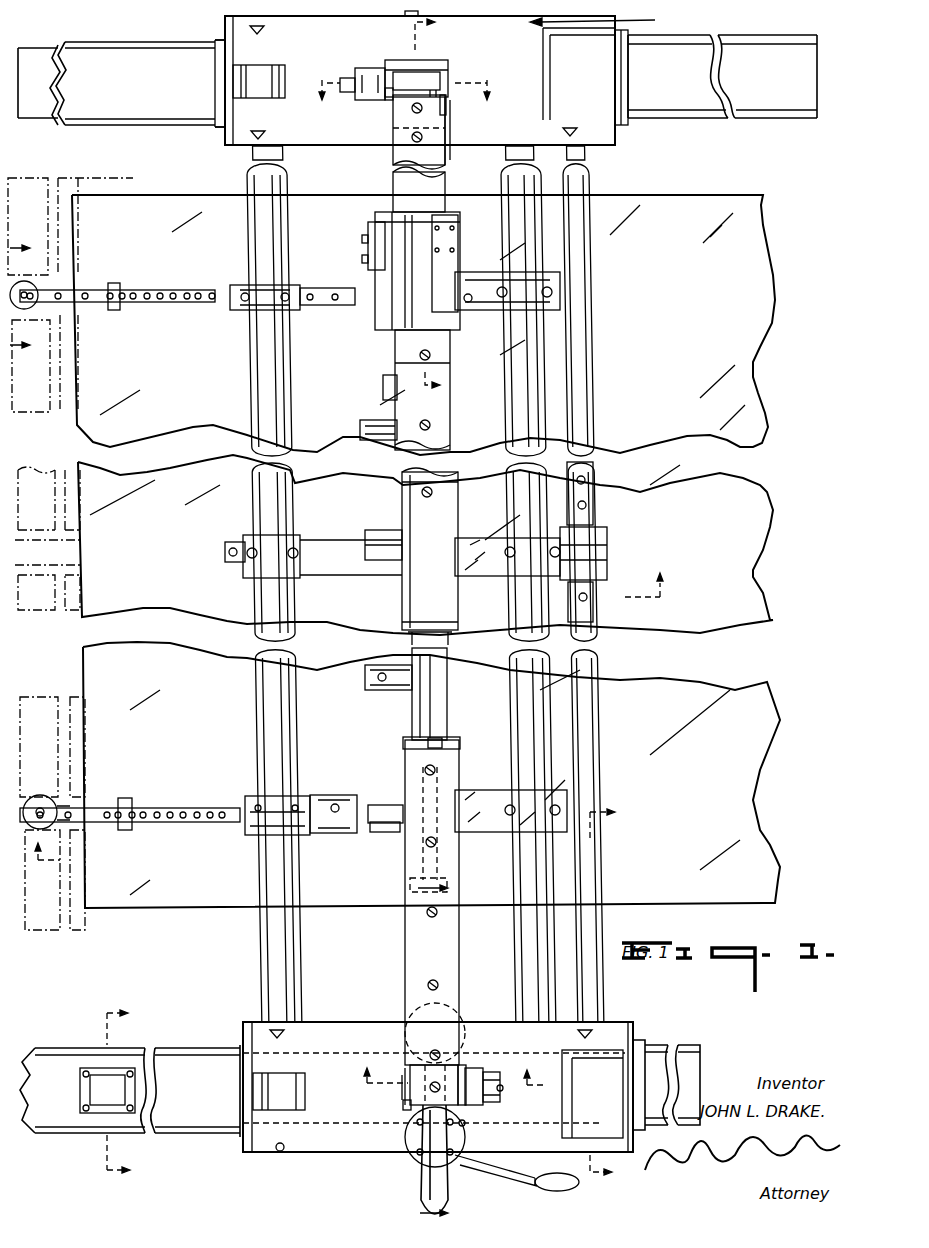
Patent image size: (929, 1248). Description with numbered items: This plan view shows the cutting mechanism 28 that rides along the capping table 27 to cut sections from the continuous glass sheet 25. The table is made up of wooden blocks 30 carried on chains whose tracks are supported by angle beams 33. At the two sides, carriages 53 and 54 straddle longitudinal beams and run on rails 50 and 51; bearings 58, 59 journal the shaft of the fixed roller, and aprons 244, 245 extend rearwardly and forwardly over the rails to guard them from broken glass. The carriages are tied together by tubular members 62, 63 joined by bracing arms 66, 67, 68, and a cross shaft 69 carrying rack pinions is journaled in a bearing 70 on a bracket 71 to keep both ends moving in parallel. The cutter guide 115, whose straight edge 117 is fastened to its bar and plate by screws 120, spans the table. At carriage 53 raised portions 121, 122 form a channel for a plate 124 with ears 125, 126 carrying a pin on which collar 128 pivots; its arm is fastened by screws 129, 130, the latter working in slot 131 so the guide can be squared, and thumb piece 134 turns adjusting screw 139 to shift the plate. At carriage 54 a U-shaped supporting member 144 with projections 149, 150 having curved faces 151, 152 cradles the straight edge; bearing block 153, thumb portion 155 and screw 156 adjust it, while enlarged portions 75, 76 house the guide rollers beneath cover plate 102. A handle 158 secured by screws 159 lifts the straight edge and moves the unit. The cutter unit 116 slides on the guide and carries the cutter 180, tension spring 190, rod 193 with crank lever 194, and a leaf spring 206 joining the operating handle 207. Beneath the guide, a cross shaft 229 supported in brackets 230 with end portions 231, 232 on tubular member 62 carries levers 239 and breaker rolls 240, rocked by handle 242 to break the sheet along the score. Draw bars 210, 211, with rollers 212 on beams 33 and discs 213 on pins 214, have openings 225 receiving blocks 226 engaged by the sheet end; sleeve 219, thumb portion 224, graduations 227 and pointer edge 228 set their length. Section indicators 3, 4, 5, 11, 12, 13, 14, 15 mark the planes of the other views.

The rail 50 is at (40, 60).
The guard member 245 is at (177, 105).
The cutting mechanism 28 is at (592, 16).
The guard member 244 is at (755, 98).
The raised portion 121 is at (395, 62).
The section line 11 is at (433, 216).
The collar 128 is at (440, 65).
The rectangular plate 124 is at (448, 75).
The thumb piece 134 is at (356, 80).
The section line 4 is at (405, 85).
The adjusting screw 139 is at (345, 92).
The upstanding ear 126 is at (388, 100).
The upstanding ear 125 is at (440, 92).
The raised portion 122 is at (447, 112).
The screw 129 is at (425, 137).
The supporting carriage 53 is at (332, 136).
The screw 130 is at (393, 155).
The slot 131 is at (446, 145).
The capping table 27 is at (68, 185).
The section line 14 is at (25, 300).
The angle beam 33 is at (55, 272).
The openings 225 is at (160, 290).
The block 226 is at (60, 292).
The horizontal rollers 212 is at (110, 310).
The draw bar 211 is at (152, 304).
The sleeve 219 is at (245, 318).
The thumb portion 224 is at (320, 306).
The edge 228 is at (300, 312).
The rod 193 is at (395, 340).
The flat leaf spring 206 is at (383, 378).
The operating handle 207 is at (388, 425).
The crank lever 194 is at (419, 189).
The cutter unit 116 is at (445, 235).
The cutter 180 is at (372, 250).
The bracing arm 68 is at (480, 275).
The tension spring 190 is at (385, 270).
The glass sheet 25 is at (770, 265).
The cutter guide 115 is at (442, 523).
The breaker rolls 240 is at (388, 540).
The bracket 71 is at (570, 530).
The bearing 70 is at (607, 545).
The section line 13 is at (358, 729).
The bracing arm 67 is at (338, 578).
The wooden blocks 30 is at (45, 700).
The disc 213 is at (38, 797).
The vertical pin 214 is at (48, 808).
The draw bar 210 is at (195, 808).
The graduations 227 is at (262, 838).
The tubular member 62 is at (448, 683).
The cross shaft 229 is at (420, 712).
The upstanding end portion 231 is at (442, 738).
The brackets 230 is at (403, 750).
The tubular member 63 is at (527, 752).
The bracing arm 66 is at (500, 792).
The levers 239 is at (385, 832).
The section line 15 is at (611, 994).
The cross shaft 69 is at (583, 870).
The upstanding end portion 232 is at (412, 885).
The section line 12 is at (451, 1050).
The straight edge 117 is at (408, 938).
The screws 120 is at (440, 982).
The hollow enlarged portion 75 is at (410, 1018).
The supporting carriage 54 is at (372, 1015).
The screws 159 is at (437, 1048).
The arcuately curved face 151 is at (405, 1068).
The projecting portion 150 is at (463, 1068).
The thumb portion 155 is at (495, 1075).
The section line 3 is at (448, 1081).
The projecting portion 149 is at (410, 1098).
The supporting member 144 is at (403, 1112).
The bearing block 153 is at (478, 1100).
The screw 156 is at (505, 1092).
The cover plate 102 is at (407, 1135).
The arcuately curved face 152 is at (466, 1125).
The hollow enlarged portion 76 is at (415, 1150).
The operating handle 158 is at (425, 1192).
The operating handle 242 is at (505, 1182).
The section line 5 is at (116, 1096).
The bearing 59 is at (285, 1036).
The bearing 58 is at (278, 1152).
The rail 51 is at (688, 1065).